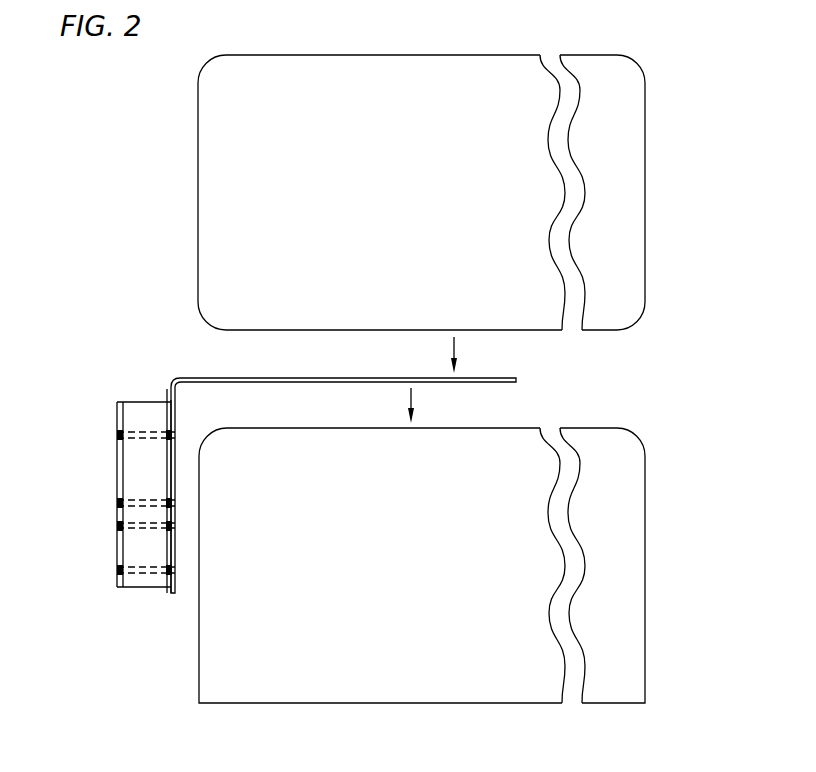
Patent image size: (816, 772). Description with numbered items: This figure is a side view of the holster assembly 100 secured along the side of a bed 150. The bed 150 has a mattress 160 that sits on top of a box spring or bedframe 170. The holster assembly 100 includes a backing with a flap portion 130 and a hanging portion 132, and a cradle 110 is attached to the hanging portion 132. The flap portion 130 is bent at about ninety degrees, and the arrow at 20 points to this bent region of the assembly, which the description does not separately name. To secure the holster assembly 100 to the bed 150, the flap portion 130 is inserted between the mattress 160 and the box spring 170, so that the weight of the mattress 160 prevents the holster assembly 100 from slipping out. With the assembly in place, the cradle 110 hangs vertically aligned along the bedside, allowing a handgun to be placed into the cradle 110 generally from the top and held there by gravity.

The holster assembly 100 is at (112, 357).
The bracket 20 is at (197, 367).
The cradle 110 is at (171, 607).
The flap portion 130 is at (313, 379).
The hanging portion 132 is at (175, 478).
The bed 150 is at (730, 43).
The mattress 160 is at (638, 98).
The box spring or bedframe 170 is at (635, 493).